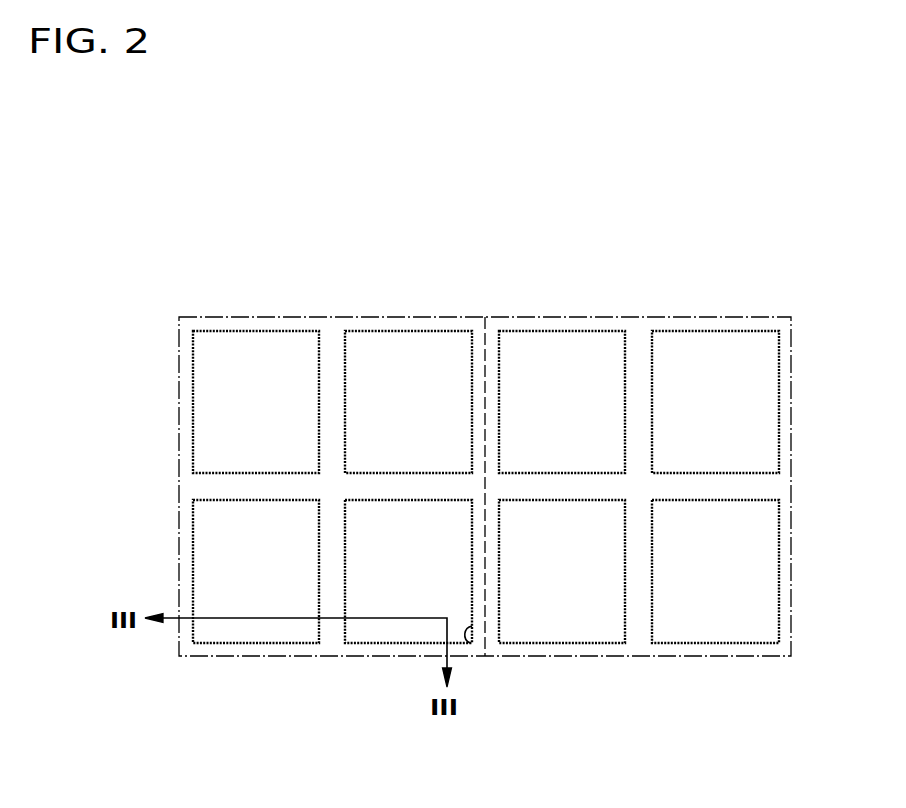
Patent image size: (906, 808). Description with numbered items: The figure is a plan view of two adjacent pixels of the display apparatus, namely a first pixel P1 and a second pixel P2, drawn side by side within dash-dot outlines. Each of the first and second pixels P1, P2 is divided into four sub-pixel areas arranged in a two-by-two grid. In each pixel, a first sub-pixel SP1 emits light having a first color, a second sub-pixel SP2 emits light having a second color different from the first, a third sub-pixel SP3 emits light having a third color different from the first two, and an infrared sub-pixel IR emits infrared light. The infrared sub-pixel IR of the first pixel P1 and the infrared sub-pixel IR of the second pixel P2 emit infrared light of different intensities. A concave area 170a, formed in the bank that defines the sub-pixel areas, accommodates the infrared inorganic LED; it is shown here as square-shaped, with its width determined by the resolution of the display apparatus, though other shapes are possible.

The first pixel P1 is at (335, 302).
The second pixel P2 is at (641, 302).
The first sub-pixel SP1 is at (409, 402).
The second sub-pixel SP2 is at (562, 402).
The third sub-pixel SP3 is at (409, 571).
The infrared sub-pixel IR is at (562, 571).
The concave area 170a is at (470, 643).